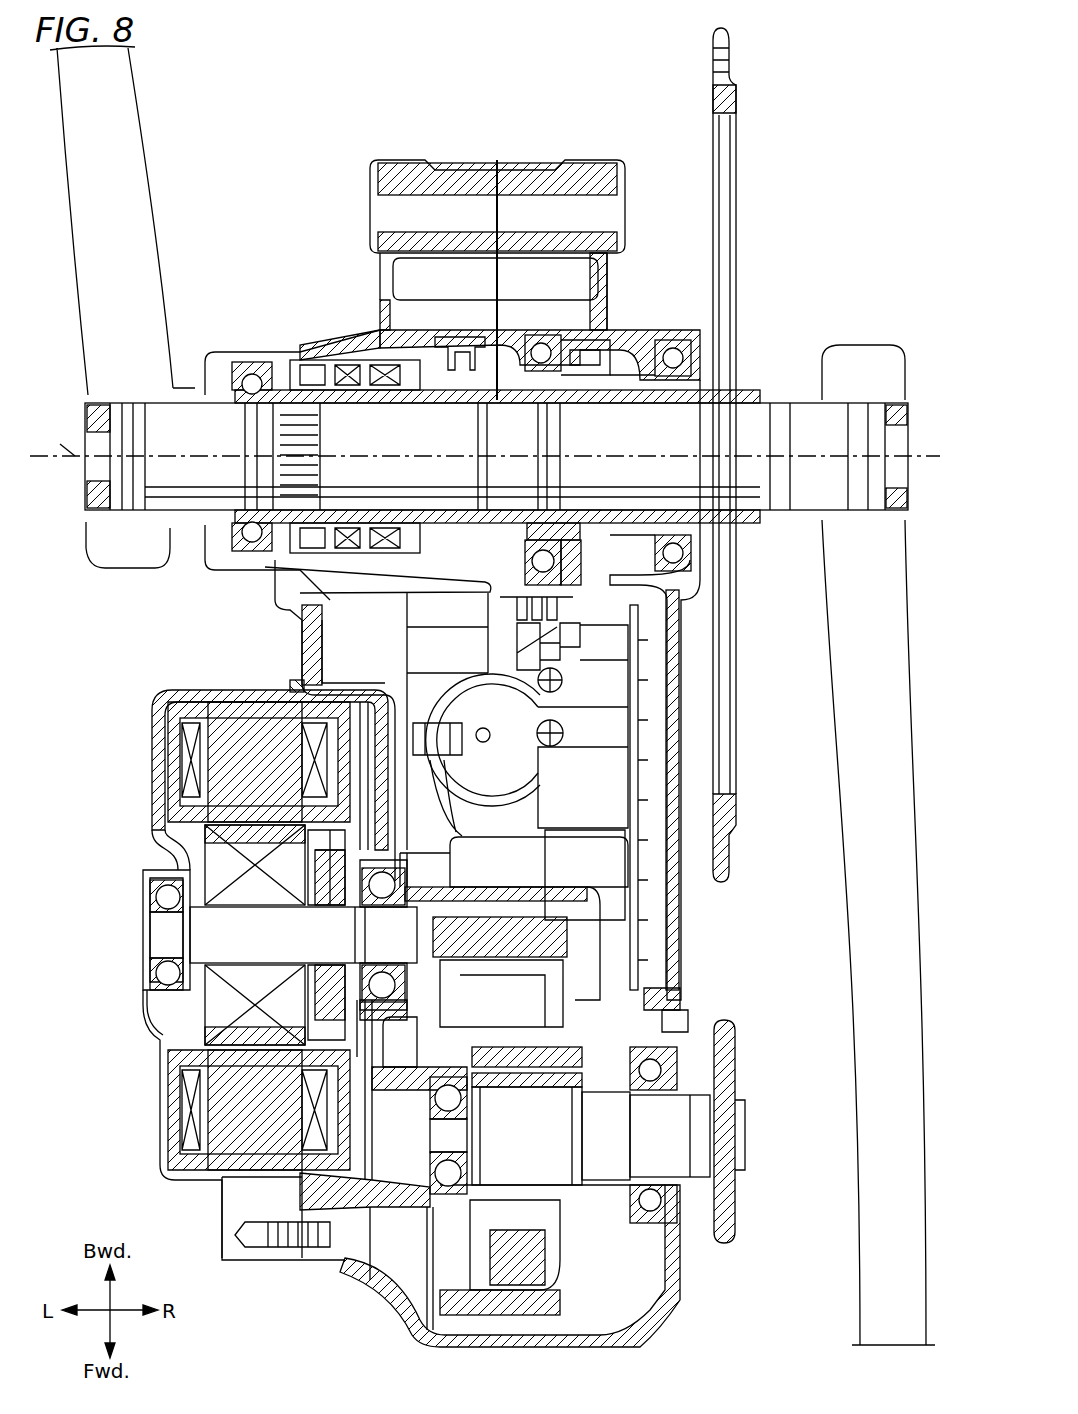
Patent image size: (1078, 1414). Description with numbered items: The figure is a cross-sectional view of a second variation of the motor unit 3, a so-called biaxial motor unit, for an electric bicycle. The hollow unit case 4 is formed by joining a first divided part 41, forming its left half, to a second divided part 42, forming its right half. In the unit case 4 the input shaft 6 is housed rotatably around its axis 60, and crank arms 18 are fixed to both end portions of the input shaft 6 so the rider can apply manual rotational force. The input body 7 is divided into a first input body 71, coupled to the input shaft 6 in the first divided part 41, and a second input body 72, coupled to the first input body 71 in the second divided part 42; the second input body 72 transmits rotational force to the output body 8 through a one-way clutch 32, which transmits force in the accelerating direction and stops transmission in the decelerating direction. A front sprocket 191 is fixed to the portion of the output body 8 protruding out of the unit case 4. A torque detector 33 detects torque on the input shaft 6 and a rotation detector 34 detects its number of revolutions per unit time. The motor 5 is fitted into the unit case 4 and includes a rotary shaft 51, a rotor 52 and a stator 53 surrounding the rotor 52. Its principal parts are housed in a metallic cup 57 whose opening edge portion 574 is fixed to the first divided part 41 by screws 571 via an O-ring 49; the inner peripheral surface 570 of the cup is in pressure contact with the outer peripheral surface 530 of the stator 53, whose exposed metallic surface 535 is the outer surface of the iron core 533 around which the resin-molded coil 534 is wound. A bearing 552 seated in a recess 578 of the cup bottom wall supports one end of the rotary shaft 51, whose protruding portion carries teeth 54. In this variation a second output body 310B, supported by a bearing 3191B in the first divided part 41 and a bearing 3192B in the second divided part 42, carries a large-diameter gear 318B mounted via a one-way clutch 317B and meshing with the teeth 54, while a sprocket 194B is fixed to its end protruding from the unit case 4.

The motor unit 3 is at (296, 185).
The unit case 4 is at (385, 1305).
The motor 5 is at (160, 720).
The input shaft 6 is at (185, 430).
The input body 7 is at (318, 370).
The output body 8 is at (614, 345).
The crank arms 18 is at (112, 98).
The one-way clutch 32 is at (572, 402).
The torque detector 33 is at (378, 402).
The rotation detector 34 is at (462, 352).
The first divided part 41 is at (415, 1330).
The second divided part 42 is at (600, 1320).
The O-ring 49 is at (290, 686).
The rotary shaft 51 is at (225, 932).
The rotor 52 is at (220, 1005).
The stator 53 is at (225, 1100).
The teeth 54 is at (530, 915).
The metallic cup 57 is at (155, 1142).
The axis 60 is at (56, 436).
The first input body 71 is at (290, 370).
The second input body 72 is at (515, 395).
The front sprocket 191 is at (728, 99).
The sprocket 194B is at (735, 1228).
The second output body 310B is at (545, 1135).
The one-way clutch 317B is at (540, 1240).
The gear 318B is at (465, 1315).
The outer peripheral surface 530 is at (235, 1180).
The iron core 533 is at (190, 1118).
The coil 534 is at (195, 1108).
The metallic surface 535 is at (238, 1215).
The bearing 552 is at (160, 880).
The inner peripheral surface 570 is at (180, 1162).
The screws 571 is at (270, 1240).
The opening edge portion 574 is at (300, 678).
The recess 578 is at (160, 925).
The bearing 3191B is at (440, 1120).
The bearing 3192B is at (672, 1055).